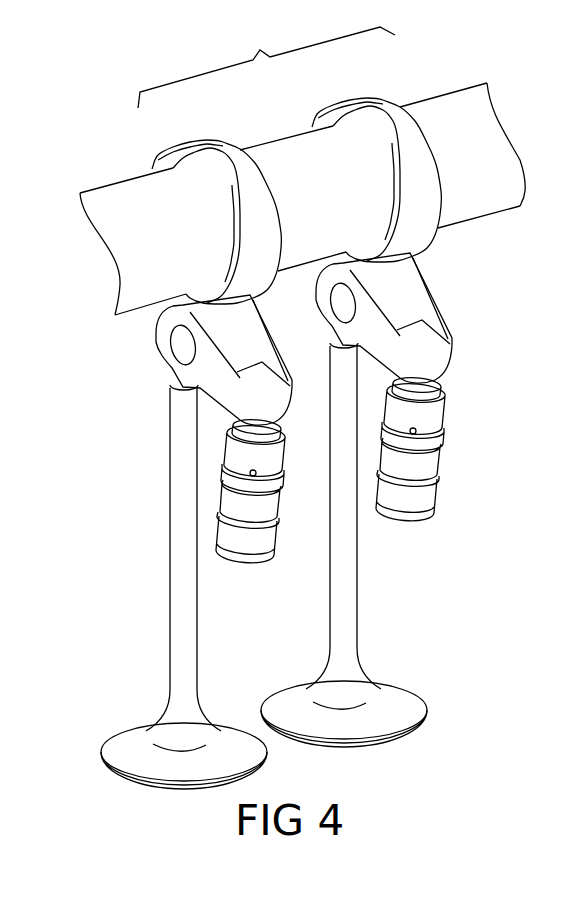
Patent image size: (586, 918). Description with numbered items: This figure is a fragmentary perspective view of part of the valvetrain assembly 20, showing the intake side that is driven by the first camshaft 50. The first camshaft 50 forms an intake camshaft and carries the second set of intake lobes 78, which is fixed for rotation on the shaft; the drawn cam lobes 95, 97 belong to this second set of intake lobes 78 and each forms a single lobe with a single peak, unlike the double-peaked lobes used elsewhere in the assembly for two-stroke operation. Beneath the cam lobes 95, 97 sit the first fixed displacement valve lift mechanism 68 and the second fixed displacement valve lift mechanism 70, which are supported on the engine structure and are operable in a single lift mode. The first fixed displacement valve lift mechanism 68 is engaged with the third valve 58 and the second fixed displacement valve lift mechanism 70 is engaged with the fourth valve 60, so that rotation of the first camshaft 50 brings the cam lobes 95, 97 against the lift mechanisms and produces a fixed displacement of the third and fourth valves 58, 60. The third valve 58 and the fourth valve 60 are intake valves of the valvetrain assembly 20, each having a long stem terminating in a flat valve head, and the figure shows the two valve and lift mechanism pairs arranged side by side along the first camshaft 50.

The valvetrain assembly 20 is at (118, 134).
The second set of intake lobes 78 is at (266, 67).
The cam lobe 95 is at (203, 139).
The cam lobe 97 is at (363, 97).
The first fixed displacement valve lift mechanism 68 is at (156, 340).
The second fixed displacement valve lift mechanism 70 is at (440, 322).
The third valve 58 is at (170, 617).
The fourth valve 60 is at (357, 598).
The first camshaft 50 is at (70, 265).